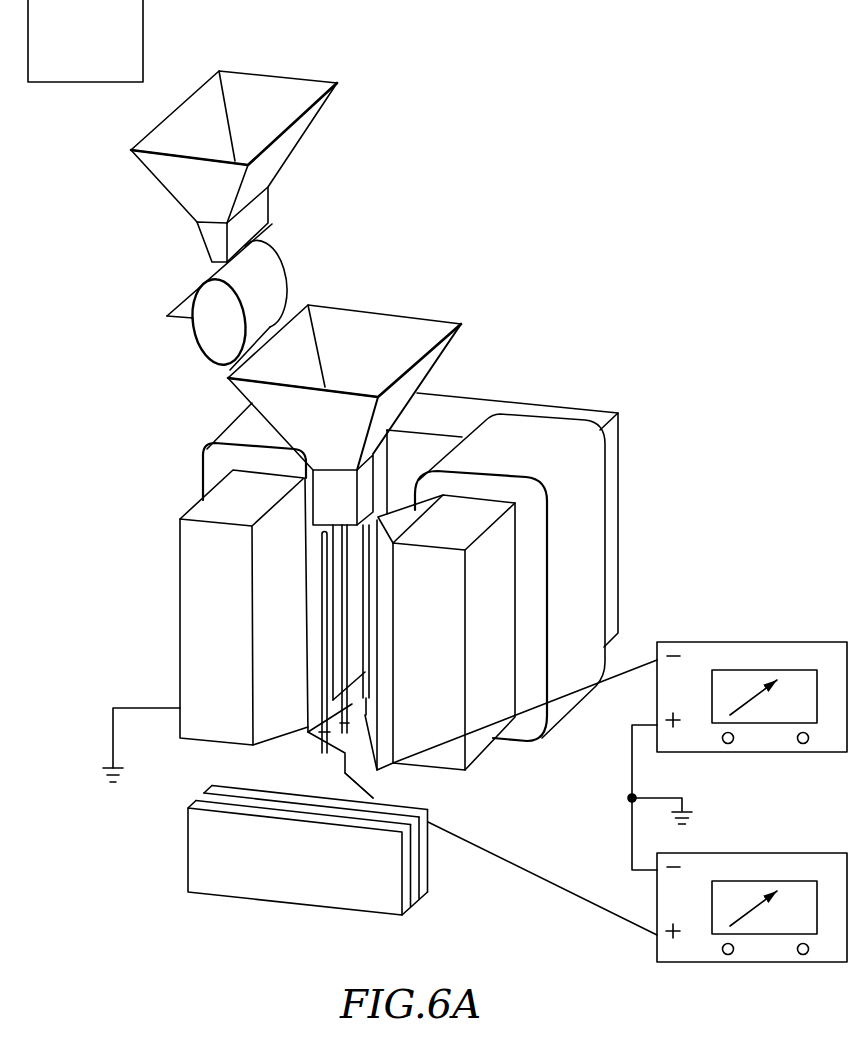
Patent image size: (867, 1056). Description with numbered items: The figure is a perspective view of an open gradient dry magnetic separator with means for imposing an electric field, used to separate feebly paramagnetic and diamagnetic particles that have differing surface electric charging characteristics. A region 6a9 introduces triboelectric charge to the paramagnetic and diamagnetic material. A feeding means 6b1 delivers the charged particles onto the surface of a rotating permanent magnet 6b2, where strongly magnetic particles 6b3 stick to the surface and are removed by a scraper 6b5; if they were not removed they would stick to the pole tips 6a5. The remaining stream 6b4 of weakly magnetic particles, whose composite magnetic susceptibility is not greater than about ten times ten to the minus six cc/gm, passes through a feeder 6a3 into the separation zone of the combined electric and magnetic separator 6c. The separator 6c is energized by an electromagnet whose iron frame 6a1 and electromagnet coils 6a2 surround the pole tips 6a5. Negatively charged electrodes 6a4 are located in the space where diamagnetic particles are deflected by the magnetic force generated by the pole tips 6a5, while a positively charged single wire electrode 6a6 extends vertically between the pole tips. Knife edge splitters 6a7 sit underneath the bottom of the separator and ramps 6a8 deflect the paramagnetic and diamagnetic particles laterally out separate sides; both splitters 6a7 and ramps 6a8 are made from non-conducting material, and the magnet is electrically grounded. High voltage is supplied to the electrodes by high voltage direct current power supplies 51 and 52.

The region for introducing triboelectric charge 6a9 is at (85, 41).
The particle feeding means 6b1 is at (309, 93).
The rotating permanent magnet 6b2 is at (289, 258).
The strongly magnetic particles 6b3 is at (228, 370).
The weakly magnetic particle stream 6b4 is at (290, 356).
The scraper 6b5 is at (174, 297).
The electric and magnetic separator 6c is at (530, 223).
The iron frame of electromagnet 6a1 is at (506, 560).
The electromagnet coils 6a2 is at (207, 470).
The feeder 6a3 is at (410, 340).
The negatively charged electrodes 6a4 is at (336, 717).
The pole tips 6a5 is at (377, 543).
The positively charged single wire electrode 6a6 is at (338, 630).
The knife edge splitters 6a7 is at (295, 815).
The ramps 6a8 is at (363, 798).
The high voltage direct current power supply 51 is at (735, 640).
The high voltage direct current power supply 52 is at (752, 851).